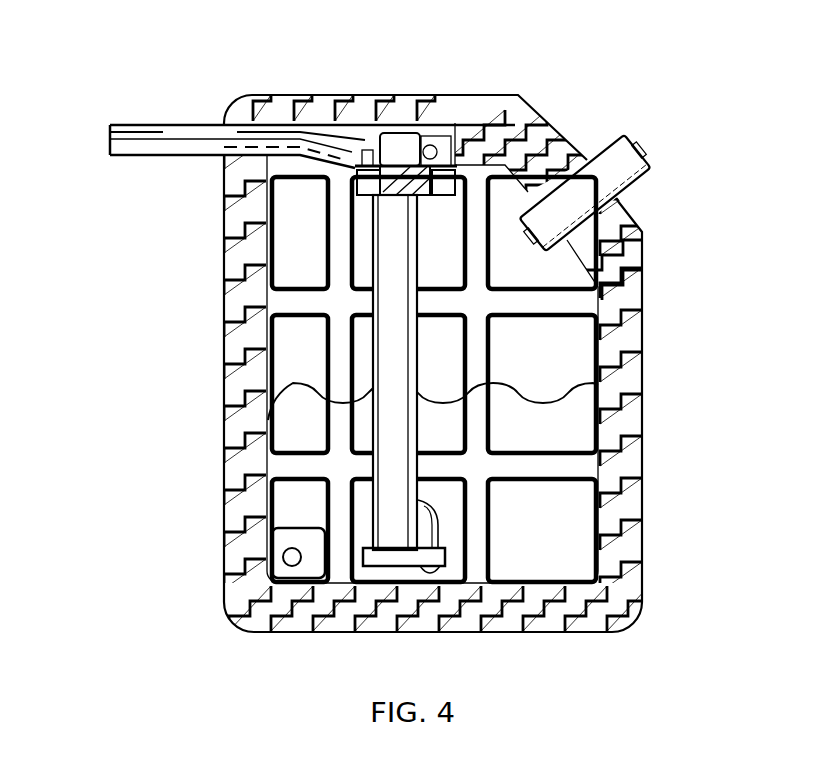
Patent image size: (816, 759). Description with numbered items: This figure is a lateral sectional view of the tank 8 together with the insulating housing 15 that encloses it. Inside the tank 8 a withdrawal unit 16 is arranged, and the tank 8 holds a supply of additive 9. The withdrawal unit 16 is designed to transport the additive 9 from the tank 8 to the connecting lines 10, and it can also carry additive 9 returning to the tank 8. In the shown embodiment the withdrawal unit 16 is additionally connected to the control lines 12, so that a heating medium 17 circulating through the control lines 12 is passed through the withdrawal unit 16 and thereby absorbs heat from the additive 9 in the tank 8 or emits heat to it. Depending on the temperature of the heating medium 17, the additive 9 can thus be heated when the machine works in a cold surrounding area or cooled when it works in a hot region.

The tank 8 is at (586, 580).
The additive 9 is at (268, 420).
The connecting lines 10 is at (138, 125).
The control lines 12 is at (143, 157).
The insulating housing 15 is at (642, 406).
The withdrawal unit 16 is at (394, 207).
The heating medium 17 is at (108, 147).